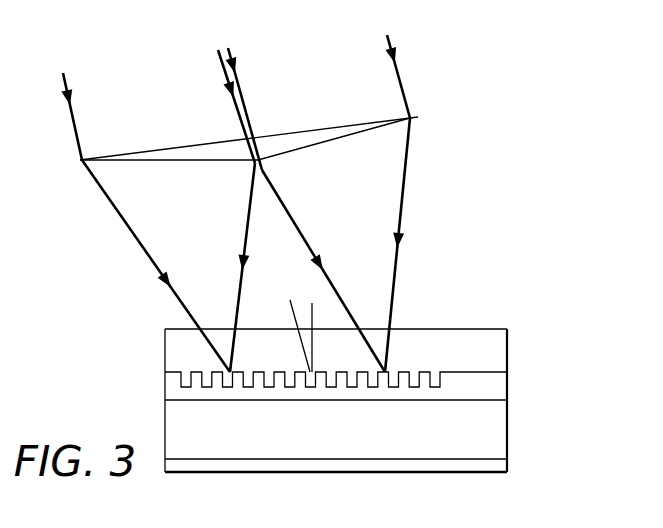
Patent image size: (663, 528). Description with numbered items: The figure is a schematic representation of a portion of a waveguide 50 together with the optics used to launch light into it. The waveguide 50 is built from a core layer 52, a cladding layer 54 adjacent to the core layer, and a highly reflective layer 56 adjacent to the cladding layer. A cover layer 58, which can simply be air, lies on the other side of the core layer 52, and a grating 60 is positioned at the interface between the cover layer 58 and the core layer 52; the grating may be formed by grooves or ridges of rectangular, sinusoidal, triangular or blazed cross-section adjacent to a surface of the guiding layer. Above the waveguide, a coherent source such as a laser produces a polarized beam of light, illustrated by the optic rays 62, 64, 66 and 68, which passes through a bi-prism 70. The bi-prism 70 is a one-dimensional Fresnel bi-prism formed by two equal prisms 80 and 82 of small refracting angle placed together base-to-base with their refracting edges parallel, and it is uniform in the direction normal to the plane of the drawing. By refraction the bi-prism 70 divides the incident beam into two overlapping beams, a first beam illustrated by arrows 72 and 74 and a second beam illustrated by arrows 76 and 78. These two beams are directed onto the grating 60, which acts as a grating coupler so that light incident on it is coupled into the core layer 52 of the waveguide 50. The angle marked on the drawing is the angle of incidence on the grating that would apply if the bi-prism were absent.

The waveguide 50 is at (537, 318).
The core layer 52 is at (508, 388).
The cladding layer 54 is at (498, 431).
The highly reflective layer 56 is at (480, 473).
The cover layer 58 is at (460, 338).
The grating 60 is at (213, 372).
The optic ray 62 is at (66, 81).
The optic ray 64 is at (218, 68).
The optic ray 66 is at (233, 55).
The optic ray 68 is at (392, 44).
The bi-prism 70 is at (307, 148).
The first beam arrow 72 is at (135, 222).
The first beam arrow 74 is at (290, 222).
The second beam arrow 76 is at (240, 294).
The second beam arrow 78 is at (407, 223).
The prism 80 is at (173, 143).
The prism 82 is at (310, 127).